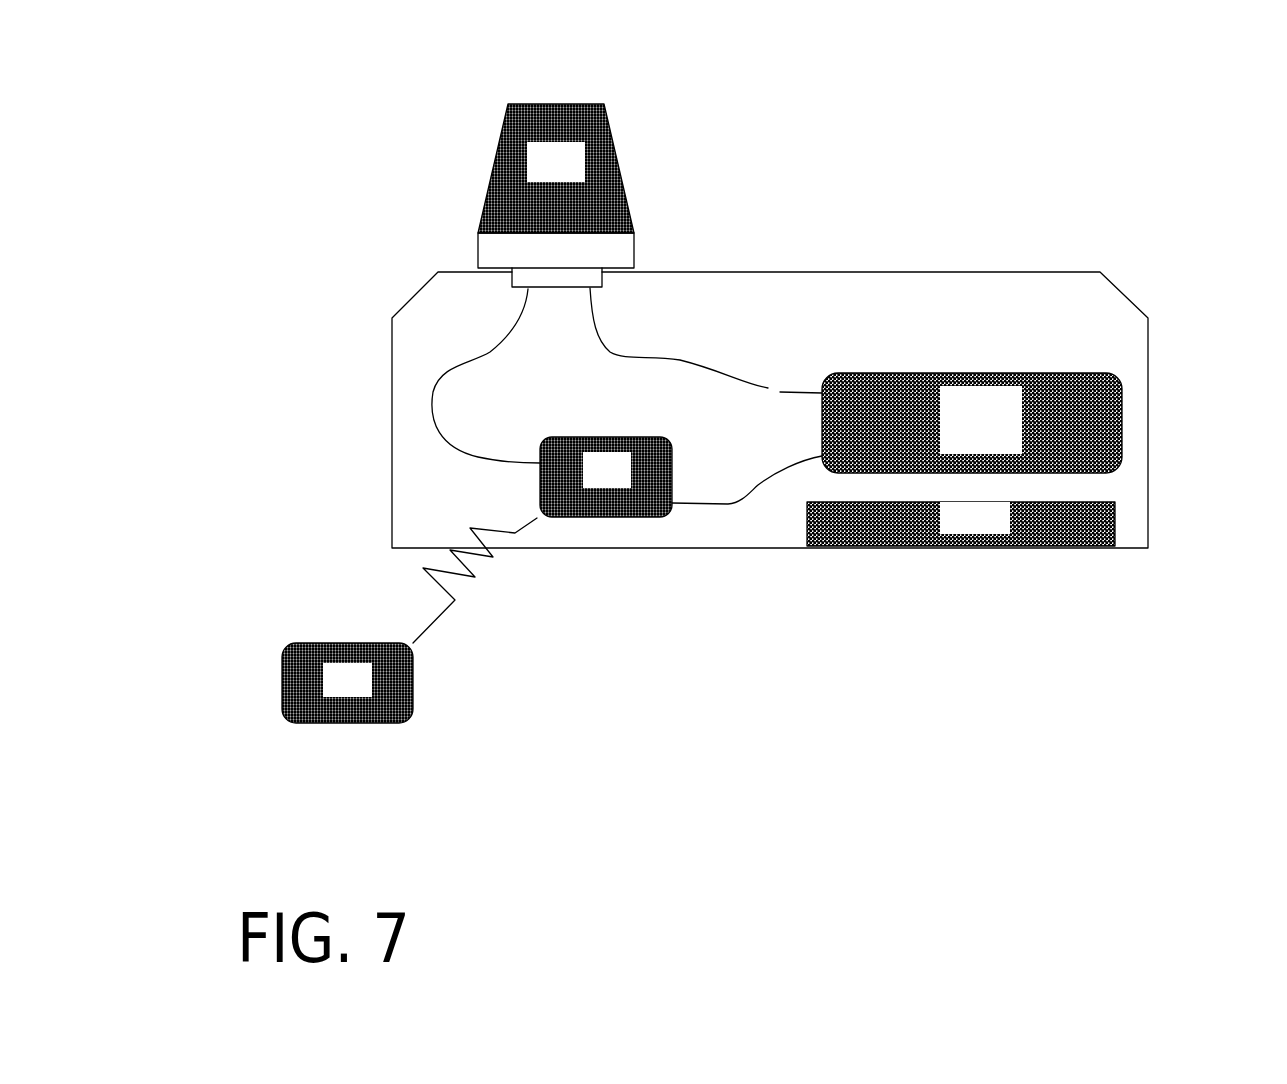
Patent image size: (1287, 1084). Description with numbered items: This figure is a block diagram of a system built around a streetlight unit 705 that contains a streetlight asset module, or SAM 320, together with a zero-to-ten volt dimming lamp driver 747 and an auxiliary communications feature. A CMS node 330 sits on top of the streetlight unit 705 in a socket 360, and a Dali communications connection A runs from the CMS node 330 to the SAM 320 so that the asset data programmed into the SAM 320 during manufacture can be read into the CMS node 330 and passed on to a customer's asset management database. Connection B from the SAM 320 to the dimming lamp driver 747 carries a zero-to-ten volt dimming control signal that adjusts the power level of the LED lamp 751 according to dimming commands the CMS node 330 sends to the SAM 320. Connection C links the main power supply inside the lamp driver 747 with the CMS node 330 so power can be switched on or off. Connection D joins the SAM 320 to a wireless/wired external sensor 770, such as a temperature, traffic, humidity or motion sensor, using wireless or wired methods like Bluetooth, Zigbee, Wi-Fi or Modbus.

The streetlight unit 705 is at (1130, 184).
The CMS node 330 is at (342, 72).
The socket 360 is at (316, 260).
The 0-10 volt dimming lamp driver 747 is at (934, 222).
The LED lamp 751 is at (1058, 666).
The streetlight asset module (SAM) 320 is at (745, 630).
The wireless/wired external sensor 770 is at (485, 680).